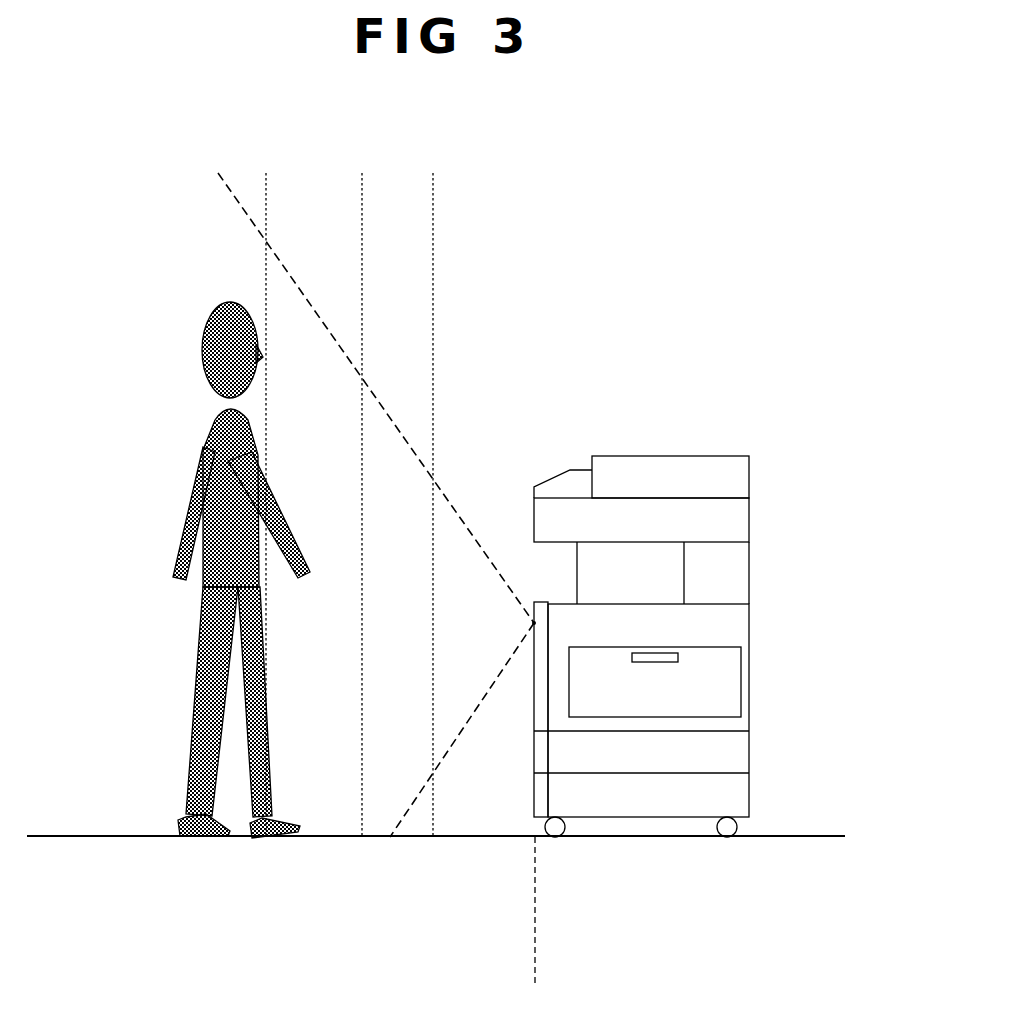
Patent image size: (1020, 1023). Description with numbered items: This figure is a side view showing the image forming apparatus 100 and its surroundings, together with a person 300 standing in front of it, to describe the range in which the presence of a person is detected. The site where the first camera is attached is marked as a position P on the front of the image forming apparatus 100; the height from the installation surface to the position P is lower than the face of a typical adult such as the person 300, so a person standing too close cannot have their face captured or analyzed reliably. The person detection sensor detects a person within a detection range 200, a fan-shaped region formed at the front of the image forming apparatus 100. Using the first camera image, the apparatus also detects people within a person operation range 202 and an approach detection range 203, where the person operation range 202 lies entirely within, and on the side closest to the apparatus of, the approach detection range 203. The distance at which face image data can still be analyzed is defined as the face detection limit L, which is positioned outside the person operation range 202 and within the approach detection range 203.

The image forming apparatus 100 is at (720, 436).
The detection range 200 is at (226, 185).
The person operation range 202 is at (535, 865).
The approach detection range 203 is at (535, 913).
The person 300 is at (202, 480).
The position P is at (531, 623).
The face detection limit L is at (535, 962).